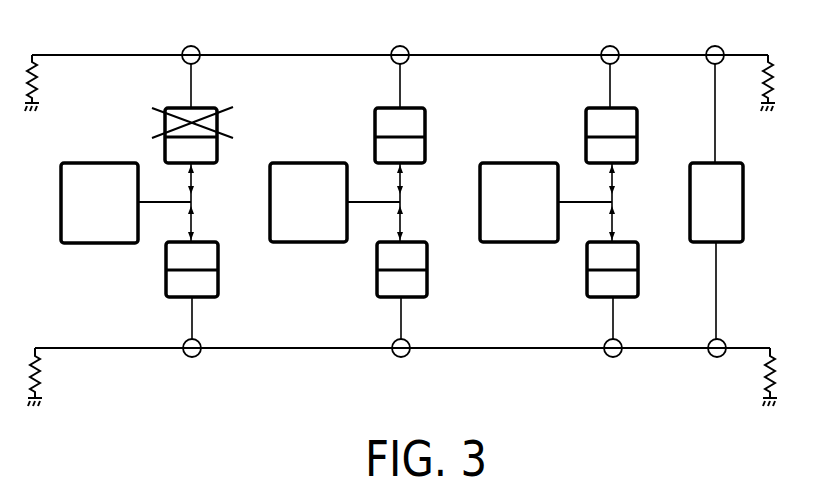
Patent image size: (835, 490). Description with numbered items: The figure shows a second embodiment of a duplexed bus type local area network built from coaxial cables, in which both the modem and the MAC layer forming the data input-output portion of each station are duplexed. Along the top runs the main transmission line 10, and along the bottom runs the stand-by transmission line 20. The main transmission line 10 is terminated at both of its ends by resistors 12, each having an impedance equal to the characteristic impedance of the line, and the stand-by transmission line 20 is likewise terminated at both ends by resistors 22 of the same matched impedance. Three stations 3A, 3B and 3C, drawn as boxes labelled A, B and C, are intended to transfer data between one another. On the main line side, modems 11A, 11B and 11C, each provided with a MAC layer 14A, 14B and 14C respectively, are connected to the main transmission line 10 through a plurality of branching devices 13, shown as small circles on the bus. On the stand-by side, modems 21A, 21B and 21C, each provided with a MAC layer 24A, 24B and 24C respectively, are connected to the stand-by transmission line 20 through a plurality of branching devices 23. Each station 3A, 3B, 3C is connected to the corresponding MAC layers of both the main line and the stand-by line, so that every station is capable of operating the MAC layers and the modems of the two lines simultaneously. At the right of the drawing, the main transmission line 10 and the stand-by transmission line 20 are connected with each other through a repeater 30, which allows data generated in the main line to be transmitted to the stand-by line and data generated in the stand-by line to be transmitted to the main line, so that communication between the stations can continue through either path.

The main transmission line 10 is at (126, 53).
The stand-by transmission line 20 is at (287, 350).
The resistor 12 is at (762, 84).
The resistor 22 is at (764, 377).
The branching device 13 is at (203, 51).
The branching device 23 is at (192, 357).
The station 3A is at (103, 161).
The station 3B is at (314, 161).
The station 3C is at (526, 161).
The modem 11A is at (232, 125).
The modem 11B is at (428, 124).
The modem 11C is at (638, 122).
The MAC layer 14A is at (216, 160).
The MAC layer 14B is at (425, 160).
The MAC layer 14C is at (637, 155).
The MAC layer 24A is at (218, 262).
The MAC layer 24B is at (427, 262).
The MAC layer 24C is at (638, 258).
The modem 21A is at (178, 298).
The modem 21B is at (387, 300).
The modem 21C is at (600, 300).
The repeater 30 is at (745, 221).